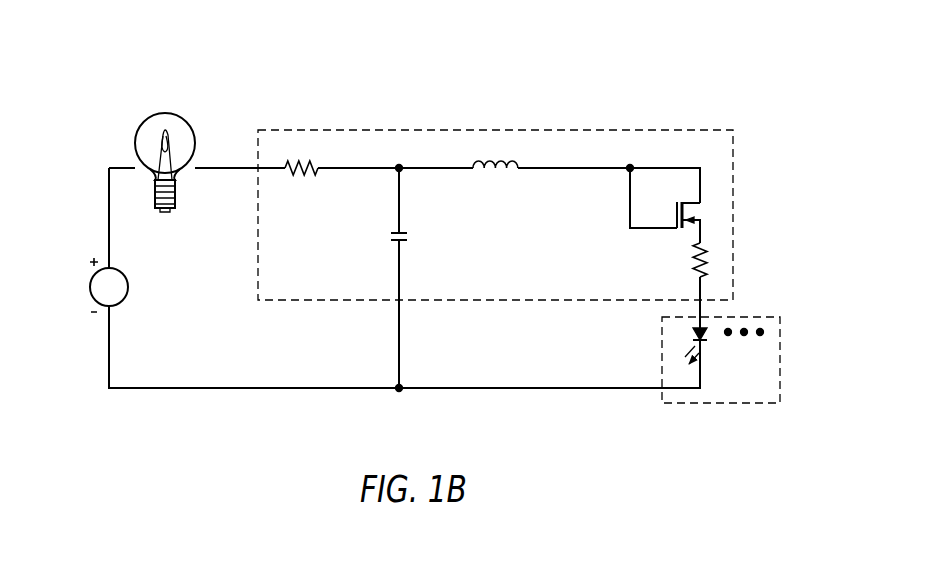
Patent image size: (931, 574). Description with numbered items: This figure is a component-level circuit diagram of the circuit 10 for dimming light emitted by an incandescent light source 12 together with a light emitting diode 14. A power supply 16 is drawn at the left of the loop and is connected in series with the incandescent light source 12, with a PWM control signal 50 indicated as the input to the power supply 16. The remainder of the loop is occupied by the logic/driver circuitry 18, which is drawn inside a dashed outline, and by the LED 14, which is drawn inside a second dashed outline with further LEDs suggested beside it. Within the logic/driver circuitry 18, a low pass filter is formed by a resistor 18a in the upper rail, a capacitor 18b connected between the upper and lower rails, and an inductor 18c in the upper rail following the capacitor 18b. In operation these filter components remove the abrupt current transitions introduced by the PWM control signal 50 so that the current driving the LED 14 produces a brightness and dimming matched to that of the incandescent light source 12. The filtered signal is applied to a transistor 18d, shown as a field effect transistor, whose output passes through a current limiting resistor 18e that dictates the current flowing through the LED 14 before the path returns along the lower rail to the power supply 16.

The circuit 10 is at (641, 57).
The incandescent light source 12 is at (182, 103).
The light emitting diode 14 is at (756, 311).
The power supply 16 is at (127, 278).
The logic/driver circuitry 18 is at (712, 128).
The resistor 18a is at (312, 182).
The capacitor 18b is at (410, 221).
The inductor 18c is at (509, 182).
The transistor 18d is at (655, 233).
The current limiting resistor 18e is at (689, 264).
The PWM control signal 50 is at (87, 287).